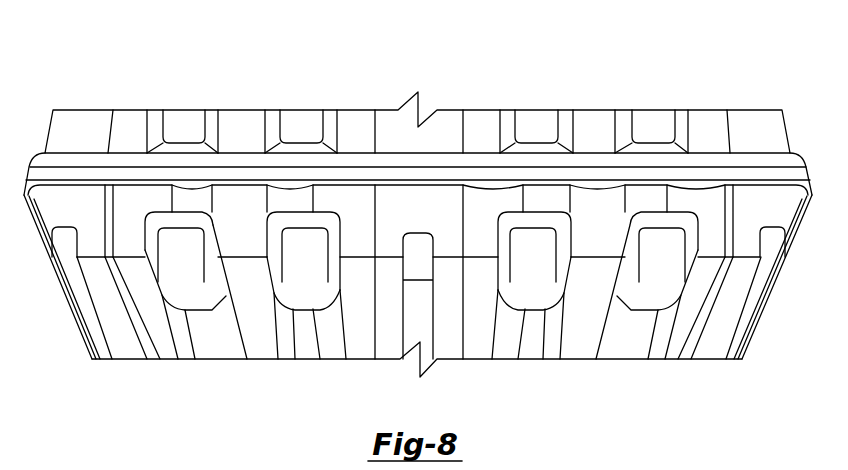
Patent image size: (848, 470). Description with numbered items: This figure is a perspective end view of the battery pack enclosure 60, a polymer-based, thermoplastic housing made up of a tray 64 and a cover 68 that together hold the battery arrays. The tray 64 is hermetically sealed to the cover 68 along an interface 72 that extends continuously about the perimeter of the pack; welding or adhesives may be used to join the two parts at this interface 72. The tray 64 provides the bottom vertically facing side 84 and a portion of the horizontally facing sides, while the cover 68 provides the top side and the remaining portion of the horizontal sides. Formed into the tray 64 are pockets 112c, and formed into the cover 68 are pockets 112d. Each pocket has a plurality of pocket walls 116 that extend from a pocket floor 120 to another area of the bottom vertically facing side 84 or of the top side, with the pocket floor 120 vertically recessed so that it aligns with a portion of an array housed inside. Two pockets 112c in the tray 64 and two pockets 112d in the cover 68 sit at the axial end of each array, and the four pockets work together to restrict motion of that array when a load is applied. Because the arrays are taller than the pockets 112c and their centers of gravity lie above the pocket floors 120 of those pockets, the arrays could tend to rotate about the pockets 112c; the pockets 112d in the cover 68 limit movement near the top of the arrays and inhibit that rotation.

The enclosure 60 is at (145, 58).
The tray 64 is at (36, 225).
The cover 68 is at (53, 110).
The interface 72 is at (30, 168).
The bottom vertically facing side 84 is at (233, 328).
The pockets 112c is at (652, 268).
The pockets 112d is at (652, 130).
The pocket walls 116 is at (273, 125).
The pocket floor 120 is at (303, 142).